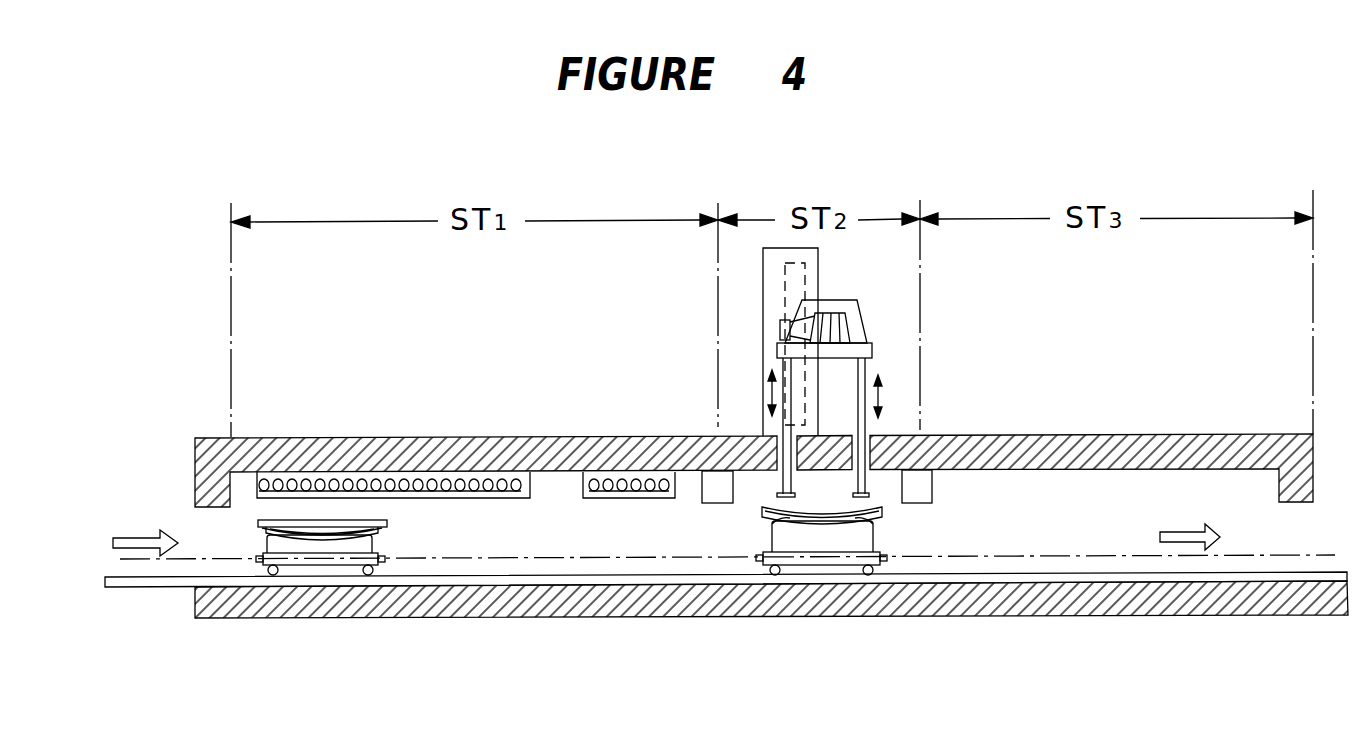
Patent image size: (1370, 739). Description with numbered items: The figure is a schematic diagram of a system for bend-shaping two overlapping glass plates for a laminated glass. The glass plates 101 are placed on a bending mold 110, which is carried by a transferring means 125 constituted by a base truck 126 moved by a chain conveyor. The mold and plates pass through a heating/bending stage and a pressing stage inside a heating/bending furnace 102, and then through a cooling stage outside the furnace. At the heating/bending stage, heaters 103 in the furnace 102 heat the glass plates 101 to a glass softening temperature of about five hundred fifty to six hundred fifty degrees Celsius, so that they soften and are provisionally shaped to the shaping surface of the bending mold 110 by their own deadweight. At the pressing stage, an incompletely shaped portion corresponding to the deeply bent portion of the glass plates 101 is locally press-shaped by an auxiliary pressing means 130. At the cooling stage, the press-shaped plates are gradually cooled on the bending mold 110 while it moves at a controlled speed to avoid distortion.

The glass plates 101 is at (305, 527).
The heating/bending furnace 102 is at (388, 467).
The heaters 103 is at (603, 485).
The bending mold 110 is at (262, 537).
The transferring means 125 is at (345, 567).
The base truck 126 is at (308, 560).
The auxiliary pressing means 130 is at (863, 373).